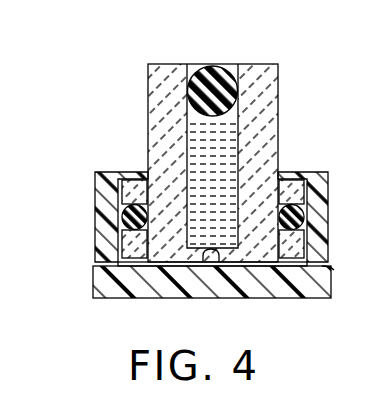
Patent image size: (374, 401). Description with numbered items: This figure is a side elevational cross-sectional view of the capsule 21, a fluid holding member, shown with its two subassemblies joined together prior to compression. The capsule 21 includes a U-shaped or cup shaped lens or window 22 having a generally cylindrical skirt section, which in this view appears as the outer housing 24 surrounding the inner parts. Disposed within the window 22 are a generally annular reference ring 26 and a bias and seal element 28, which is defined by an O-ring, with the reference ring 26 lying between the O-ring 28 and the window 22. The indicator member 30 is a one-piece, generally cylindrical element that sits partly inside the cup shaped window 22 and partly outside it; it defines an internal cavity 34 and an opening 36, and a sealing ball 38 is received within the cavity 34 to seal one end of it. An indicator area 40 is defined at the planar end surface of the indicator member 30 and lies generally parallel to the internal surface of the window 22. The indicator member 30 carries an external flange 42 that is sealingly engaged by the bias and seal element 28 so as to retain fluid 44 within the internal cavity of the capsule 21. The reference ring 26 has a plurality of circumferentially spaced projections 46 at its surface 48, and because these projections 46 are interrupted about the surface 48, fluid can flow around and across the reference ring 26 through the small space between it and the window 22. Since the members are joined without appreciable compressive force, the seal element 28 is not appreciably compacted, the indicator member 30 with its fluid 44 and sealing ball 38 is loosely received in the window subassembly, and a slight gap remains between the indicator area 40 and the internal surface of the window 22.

The capsule 21 is at (80, 299).
The window 22 is at (128, 298).
The housing 24 is at (100, 248).
The reference ring 26 is at (100, 266).
The bias and seal element 28 is at (103, 224).
The indicator member 30 is at (160, 100).
The internal cavity 34 is at (238, 142).
The opening 36 is at (214, 258).
The sealing ball 38 is at (223, 63).
The indicator area 40 is at (265, 267).
The external flange 42 is at (135, 188).
The fluid 44 is at (202, 232).
The projections 46 is at (305, 270).
The surface 48 is at (332, 270).